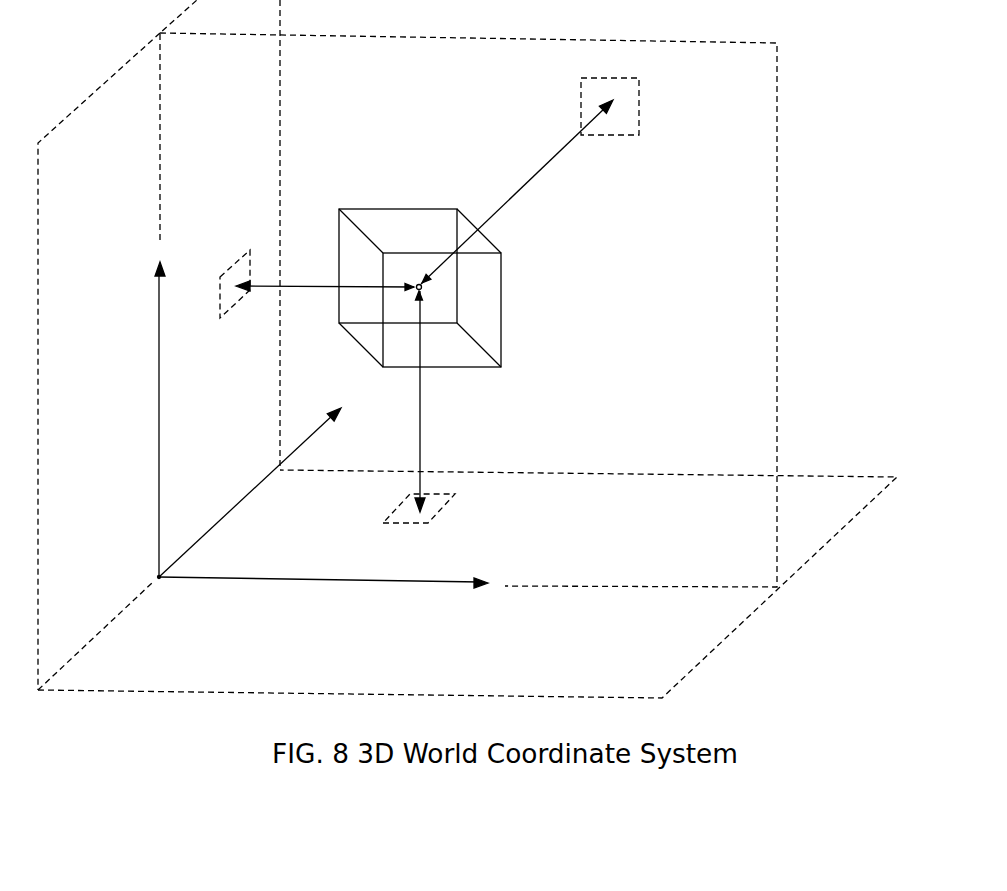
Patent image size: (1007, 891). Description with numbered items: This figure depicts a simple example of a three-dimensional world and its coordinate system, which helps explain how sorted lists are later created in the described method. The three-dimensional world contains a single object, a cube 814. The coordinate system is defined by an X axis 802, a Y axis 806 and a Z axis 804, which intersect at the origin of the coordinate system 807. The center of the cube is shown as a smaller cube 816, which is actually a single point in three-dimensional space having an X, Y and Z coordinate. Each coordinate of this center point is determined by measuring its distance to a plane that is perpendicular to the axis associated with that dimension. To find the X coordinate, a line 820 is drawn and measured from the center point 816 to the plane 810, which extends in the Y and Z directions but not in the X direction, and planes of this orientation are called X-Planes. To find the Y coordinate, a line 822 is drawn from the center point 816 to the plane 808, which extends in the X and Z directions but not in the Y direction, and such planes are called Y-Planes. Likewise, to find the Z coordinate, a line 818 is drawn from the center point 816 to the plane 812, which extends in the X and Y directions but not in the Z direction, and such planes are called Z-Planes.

The X axis 802 is at (330, 574).
The Z axis 804 is at (259, 483).
The Y axis 806 is at (202, 406).
The origin of the coordinate system 807 is at (158, 591).
The Y-Plane 808 is at (467, 584).
The X-Plane 810 is at (99, 361).
The Z-Plane 812 is at (514, 293).
The cube 814 is at (420, 190).
The center point of the cube 816 is at (506, 275).
The line to the Z-Plane 818 is at (530, 181).
The line to the X-Plane 820 is at (317, 301).
The line to the Y-Plane 822 is at (446, 407).